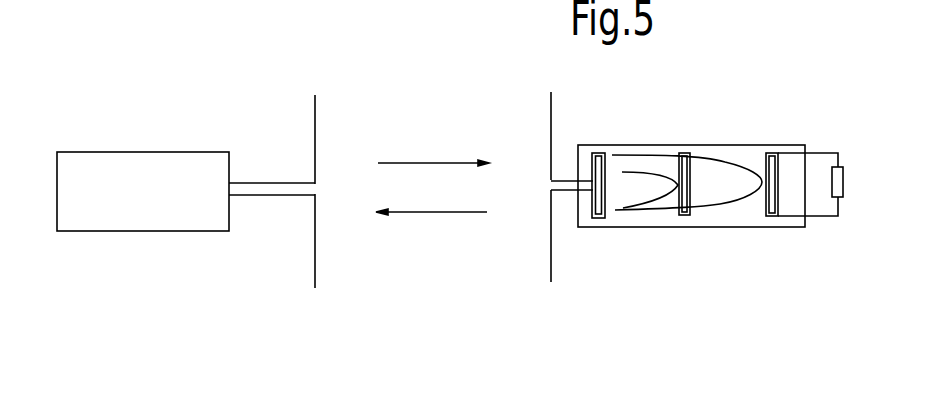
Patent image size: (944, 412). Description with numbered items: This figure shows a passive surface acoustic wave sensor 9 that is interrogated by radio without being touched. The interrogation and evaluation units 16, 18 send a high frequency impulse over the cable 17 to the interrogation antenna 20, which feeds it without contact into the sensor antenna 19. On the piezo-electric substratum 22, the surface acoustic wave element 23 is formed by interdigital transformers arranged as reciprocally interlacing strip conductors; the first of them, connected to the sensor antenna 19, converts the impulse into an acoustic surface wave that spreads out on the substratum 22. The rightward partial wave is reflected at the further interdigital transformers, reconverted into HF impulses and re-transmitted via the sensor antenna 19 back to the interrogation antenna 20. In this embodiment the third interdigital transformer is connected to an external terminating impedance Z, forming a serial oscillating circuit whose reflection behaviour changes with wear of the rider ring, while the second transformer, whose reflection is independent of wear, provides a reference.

The surface acoustic wave sensor element 9 is at (717, 185).
The interrogation unit 16 is at (143, 191).
The cable 17 is at (273, 213).
The evaluation unit 18 is at (150, 222).
The sensor antenna 19 is at (520, 305).
The interrogation antenna 20 is at (315, 118).
The substratum 22 is at (728, 150).
The surface acoustic wave element 23 is at (687, 189).